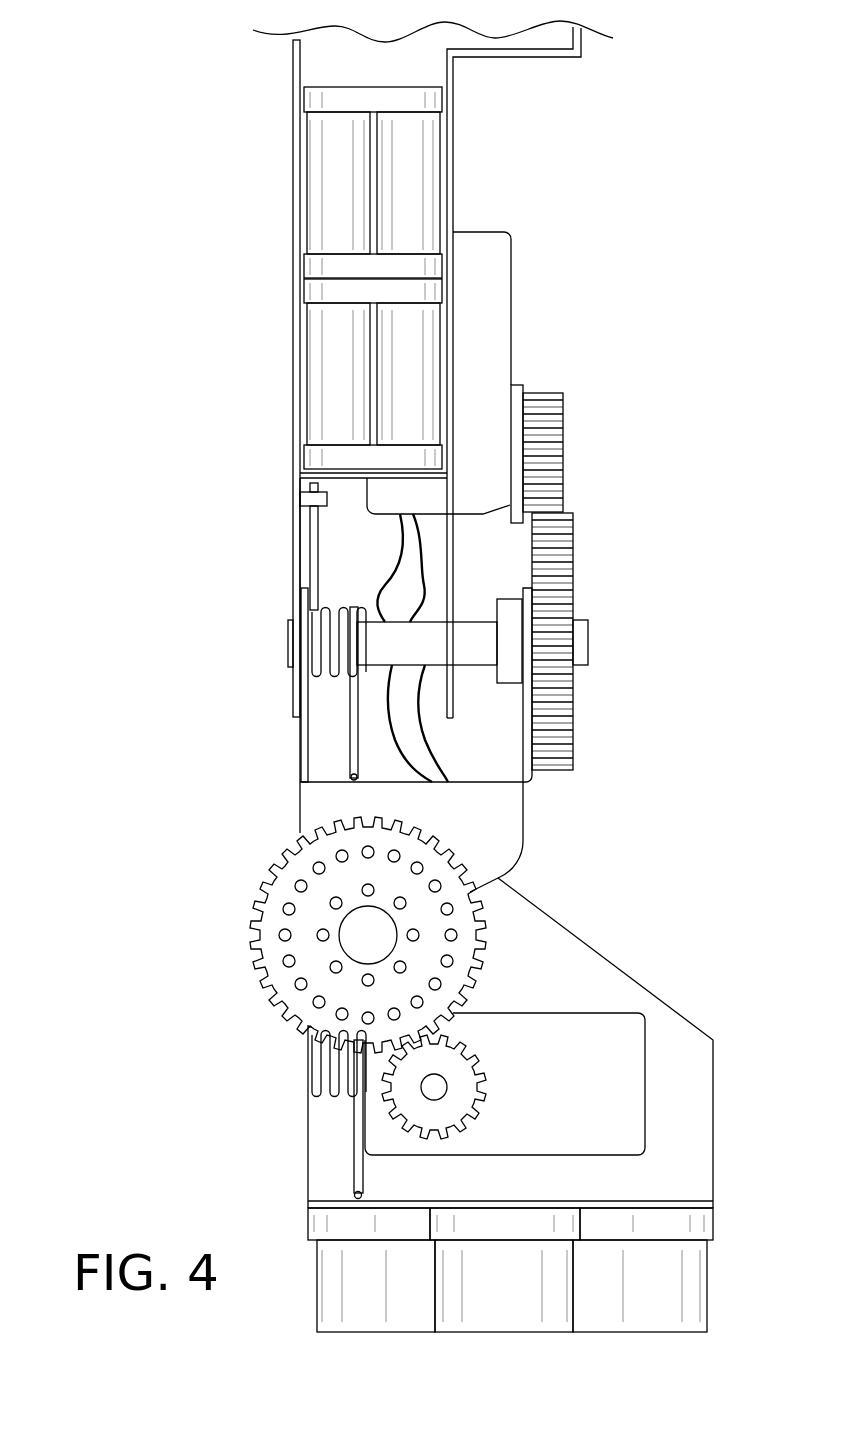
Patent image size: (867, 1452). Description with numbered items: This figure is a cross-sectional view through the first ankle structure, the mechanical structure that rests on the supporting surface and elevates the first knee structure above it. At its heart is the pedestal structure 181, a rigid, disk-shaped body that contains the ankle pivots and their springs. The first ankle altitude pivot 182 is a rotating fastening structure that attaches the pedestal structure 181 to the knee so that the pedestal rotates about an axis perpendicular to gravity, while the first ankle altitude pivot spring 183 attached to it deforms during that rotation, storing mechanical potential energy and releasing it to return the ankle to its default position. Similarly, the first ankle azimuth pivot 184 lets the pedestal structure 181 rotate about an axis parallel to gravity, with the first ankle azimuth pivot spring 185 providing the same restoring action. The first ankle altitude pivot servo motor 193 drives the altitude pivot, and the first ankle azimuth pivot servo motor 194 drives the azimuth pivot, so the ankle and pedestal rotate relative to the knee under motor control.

The pedestal structure 181 is at (568, 955).
The first ankle altitude pivot 182 is at (575, 643).
The first ankle altitude pivot spring 183 is at (330, 638).
The first ankle azimuth pivot 184 is at (360, 935).
The first ankle azimuth pivot spring 185 is at (323, 1070).
The first ankle altitude pivot servo motor 193 is at (490, 281).
The first ankle azimuth pivot servo motor 194 is at (607, 1045).